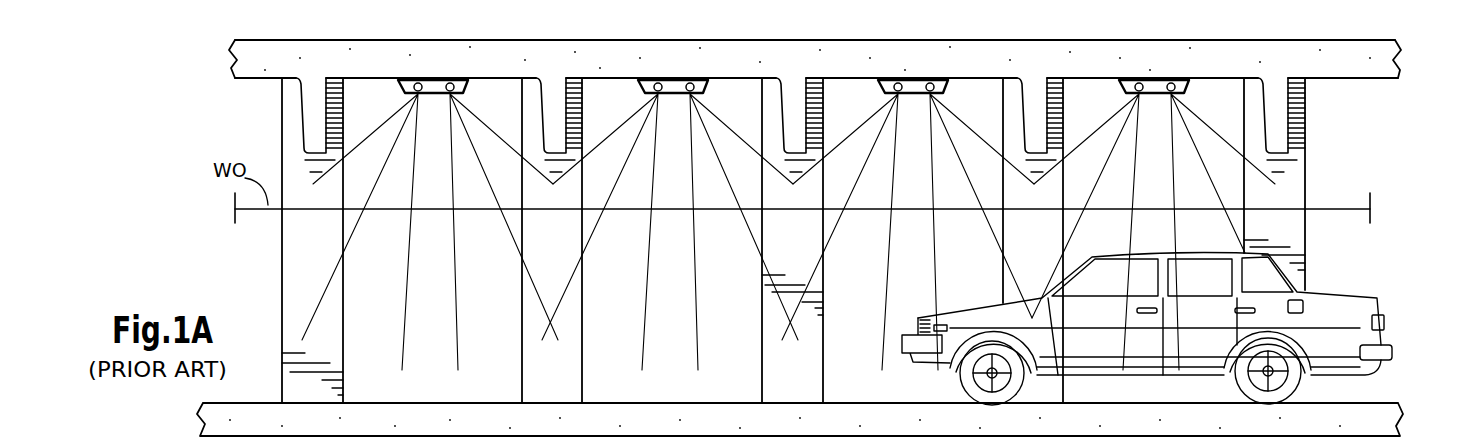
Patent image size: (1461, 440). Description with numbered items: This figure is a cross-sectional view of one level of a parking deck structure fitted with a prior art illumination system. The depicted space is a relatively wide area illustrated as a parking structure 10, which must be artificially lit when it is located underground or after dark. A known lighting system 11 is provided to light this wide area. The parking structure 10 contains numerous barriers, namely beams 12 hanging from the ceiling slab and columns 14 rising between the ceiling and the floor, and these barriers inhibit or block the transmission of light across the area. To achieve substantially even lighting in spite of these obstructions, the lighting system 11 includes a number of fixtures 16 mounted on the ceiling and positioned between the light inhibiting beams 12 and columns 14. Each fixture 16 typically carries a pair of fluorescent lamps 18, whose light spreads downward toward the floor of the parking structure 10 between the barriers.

The parking structure 10 is at (1358, 393).
The lighting system 11 is at (1192, 70).
The beams 12 is at (320, 127).
The columns 14 is at (318, 326).
The fixtures 16 is at (433, 95).
The fluorescent lamps 18 is at (449, 83).